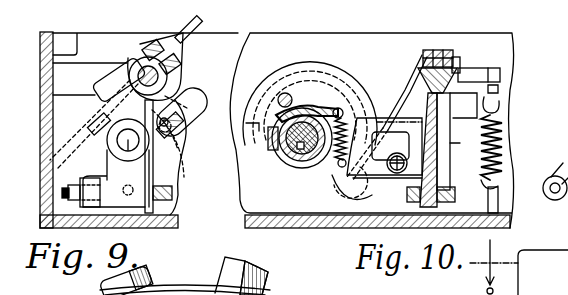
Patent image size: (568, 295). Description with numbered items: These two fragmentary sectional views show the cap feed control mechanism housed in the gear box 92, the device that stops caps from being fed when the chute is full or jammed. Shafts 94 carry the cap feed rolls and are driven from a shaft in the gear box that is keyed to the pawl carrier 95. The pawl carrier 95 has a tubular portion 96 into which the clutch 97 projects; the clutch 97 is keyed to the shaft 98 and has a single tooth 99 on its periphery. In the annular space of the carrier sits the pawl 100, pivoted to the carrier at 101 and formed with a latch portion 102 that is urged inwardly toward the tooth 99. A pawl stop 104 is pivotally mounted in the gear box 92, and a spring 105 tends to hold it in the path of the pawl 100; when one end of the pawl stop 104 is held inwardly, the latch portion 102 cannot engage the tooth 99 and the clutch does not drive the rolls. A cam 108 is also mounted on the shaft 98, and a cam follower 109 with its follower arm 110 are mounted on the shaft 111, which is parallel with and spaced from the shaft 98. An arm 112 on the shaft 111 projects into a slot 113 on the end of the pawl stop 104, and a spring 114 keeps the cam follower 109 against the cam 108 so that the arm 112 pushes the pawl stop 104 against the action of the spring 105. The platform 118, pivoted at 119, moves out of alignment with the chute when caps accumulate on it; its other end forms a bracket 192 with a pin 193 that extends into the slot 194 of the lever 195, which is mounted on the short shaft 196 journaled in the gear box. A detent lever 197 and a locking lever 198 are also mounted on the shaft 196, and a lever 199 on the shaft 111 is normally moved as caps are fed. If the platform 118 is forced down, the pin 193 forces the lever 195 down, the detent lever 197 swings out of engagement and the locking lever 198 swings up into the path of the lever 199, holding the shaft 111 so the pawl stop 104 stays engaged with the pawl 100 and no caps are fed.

In FIG. 9, the gear box 92 is at (174, 226).
In FIG. 10, the gear box 92 is at (295, 222).
In FIG. 10, the shafts 94 is at (560, 258).
In FIG. 9, the pawl carrier 95 is at (244, 141).
In FIG. 10, the tubular portion 96 is at (292, 142).
In FIG. 9, the clutch 97 is at (294, 134).
In FIG. 10, the shaft 98 is at (299, 162).
In FIG. 10, the tooth 99 is at (307, 110).
In FIG. 10, the pawl 100 is at (259, 110).
In FIG. 10, the pivot 101 is at (287, 94).
In FIG. 10, the latch portion 102 is at (341, 109).
In FIG. 10, the pawl stop 104 is at (387, 178).
In FIG. 10, the spring 105 is at (384, 145).
In FIG. 10, the cam 108 is at (338, 62).
In FIG. 10, the cam follower 109 is at (367, 190).
In FIG. 10, the follower arm 110 is at (410, 64).
In FIG. 9, the shaft 111 is at (146, 64).
In FIG. 10, the shaft 111 is at (441, 63).
In FIG. 10, the arm 112 is at (437, 150).
In FIG. 10, the slot 113 is at (440, 190).
In FIG. 10, the spring 114 is at (503, 112).
In FIG. 9, the platform 118 is at (196, 28).
In FIG. 10, the pivot 119 is at (549, 181).
In FIG. 9, the bracket 192 is at (181, 148).
In FIG. 9, the pin 193 is at (172, 140).
In FIG. 9, the slot 194 is at (190, 103).
In FIG. 9, the lever 195 is at (181, 101).
In FIG. 9, the short shaft 196 is at (128, 152).
In FIG. 9, the detent lever 197 is at (111, 184).
In FIG. 9, the locking lever 198 is at (96, 123).
In FIG. 9, the lever 199 is at (103, 86).